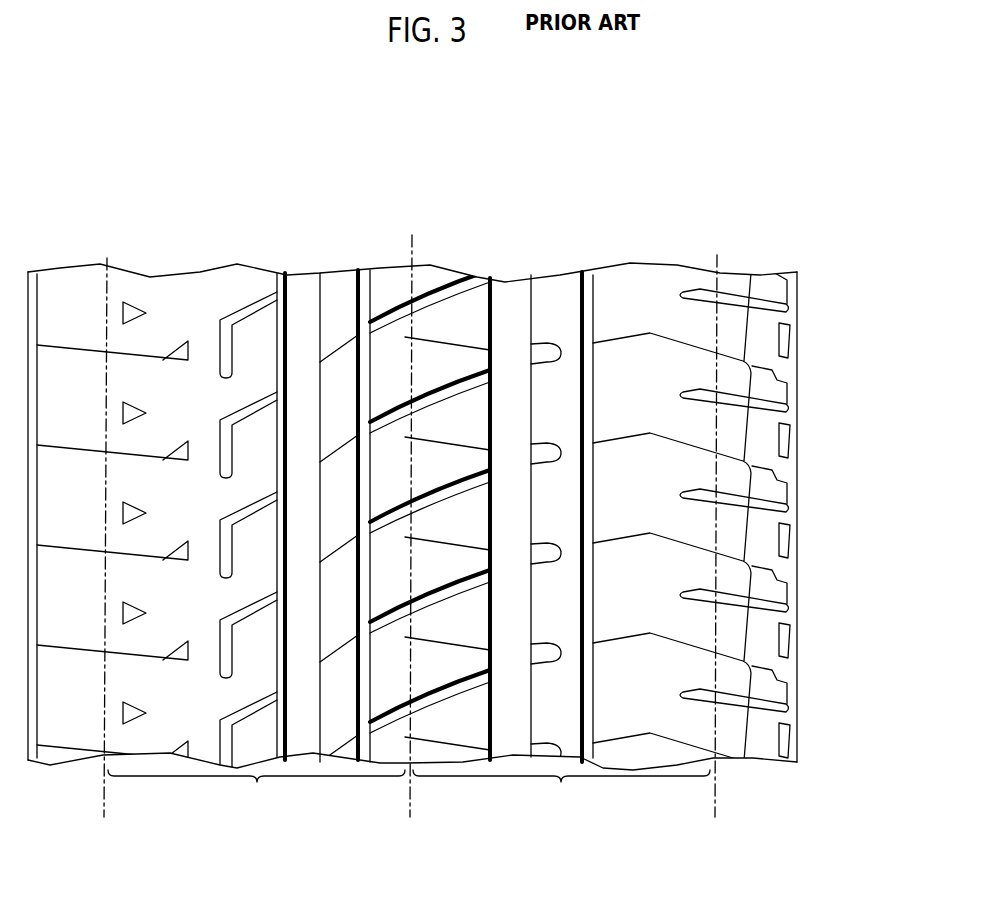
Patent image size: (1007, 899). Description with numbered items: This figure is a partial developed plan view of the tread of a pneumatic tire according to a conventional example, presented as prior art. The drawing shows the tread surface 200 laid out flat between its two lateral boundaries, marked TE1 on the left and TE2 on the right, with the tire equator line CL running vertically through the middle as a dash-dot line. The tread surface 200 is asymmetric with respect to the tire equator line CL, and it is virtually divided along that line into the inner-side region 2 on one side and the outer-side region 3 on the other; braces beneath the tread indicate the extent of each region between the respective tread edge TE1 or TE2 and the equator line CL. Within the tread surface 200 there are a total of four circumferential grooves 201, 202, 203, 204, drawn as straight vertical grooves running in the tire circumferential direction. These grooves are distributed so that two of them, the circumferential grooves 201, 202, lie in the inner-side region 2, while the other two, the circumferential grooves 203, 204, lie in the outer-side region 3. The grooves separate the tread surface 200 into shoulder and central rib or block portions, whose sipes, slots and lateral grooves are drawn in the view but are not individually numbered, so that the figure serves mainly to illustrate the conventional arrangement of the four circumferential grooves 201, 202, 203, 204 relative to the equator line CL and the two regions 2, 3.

The tread surface 200 is at (690, 252).
The circumferential groove 201 is at (302, 272).
The circumferential groove 202 is at (364, 272).
The circumferential groove 203 is at (513, 275).
The circumferential groove 204 is at (586, 272).
The inner-side region 2 is at (256, 791).
The outer-side region 3 is at (561, 791).
The first tread edge TE1 is at (104, 808).
The second tread edge TE2 is at (715, 808).
The tire equator line CL is at (410, 808).